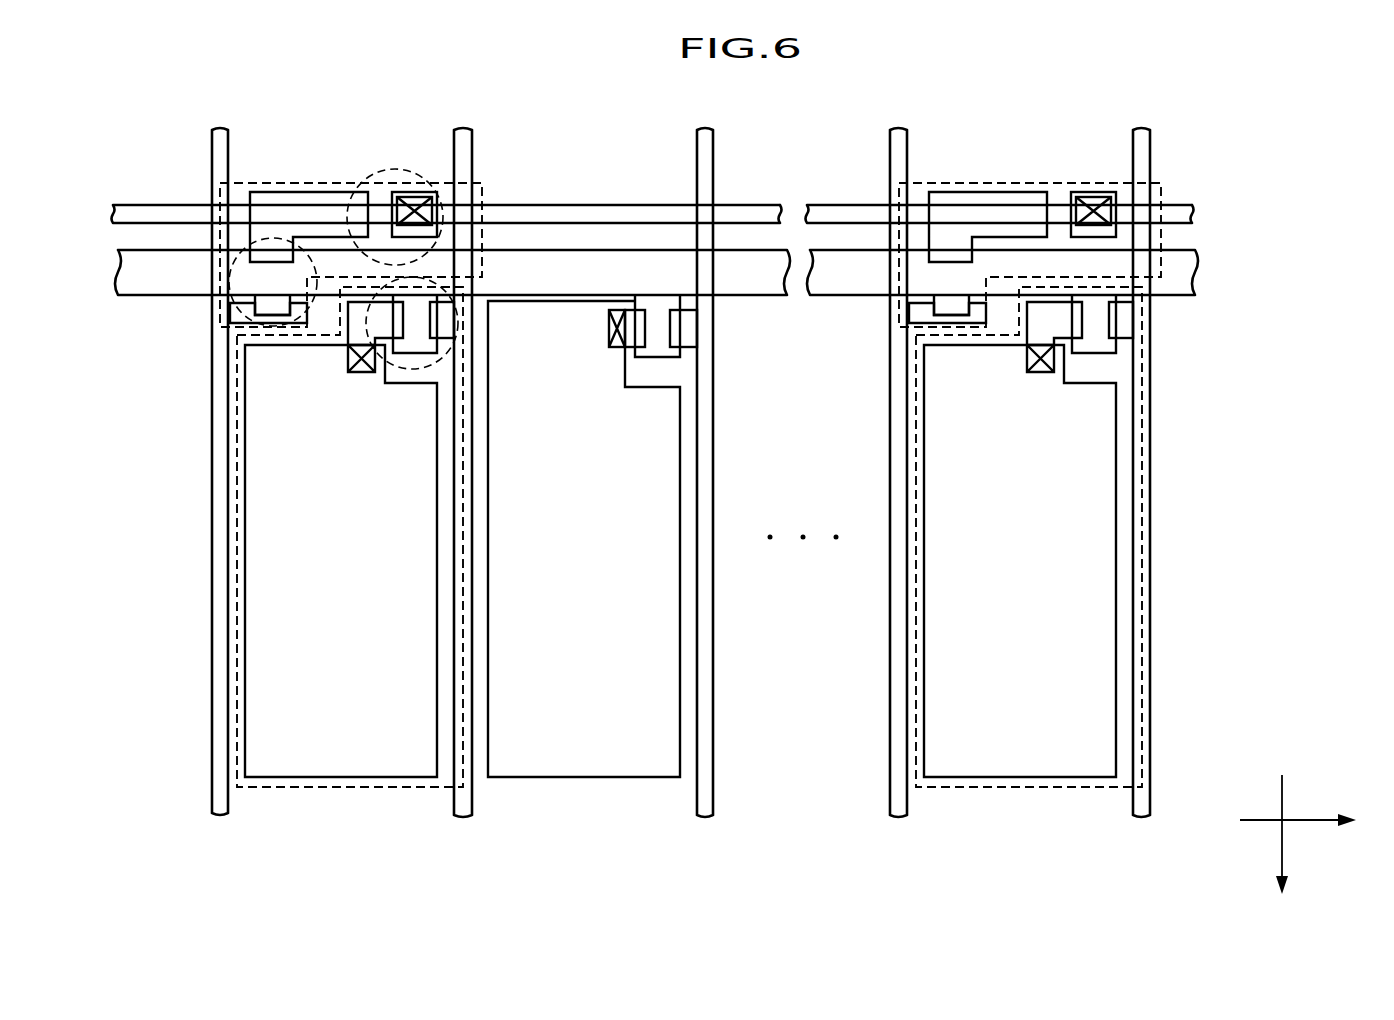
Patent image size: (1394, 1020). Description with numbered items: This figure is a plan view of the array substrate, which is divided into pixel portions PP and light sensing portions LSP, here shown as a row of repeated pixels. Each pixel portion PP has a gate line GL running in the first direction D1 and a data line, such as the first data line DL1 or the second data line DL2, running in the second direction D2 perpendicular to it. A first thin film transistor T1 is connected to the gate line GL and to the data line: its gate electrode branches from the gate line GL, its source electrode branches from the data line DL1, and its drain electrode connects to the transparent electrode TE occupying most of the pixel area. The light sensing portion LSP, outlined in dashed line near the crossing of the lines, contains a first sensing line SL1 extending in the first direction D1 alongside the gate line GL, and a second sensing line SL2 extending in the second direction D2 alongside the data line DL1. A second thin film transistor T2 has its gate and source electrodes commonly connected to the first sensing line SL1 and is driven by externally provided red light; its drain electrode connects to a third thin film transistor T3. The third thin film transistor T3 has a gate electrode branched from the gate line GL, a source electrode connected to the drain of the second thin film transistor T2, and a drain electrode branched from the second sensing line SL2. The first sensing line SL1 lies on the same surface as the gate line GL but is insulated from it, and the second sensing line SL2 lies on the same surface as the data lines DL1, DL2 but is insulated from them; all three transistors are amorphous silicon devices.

The first sensing line SL1 is at (130, 207).
The second sensing line SL2 is at (218, 148).
The gate line GL is at (147, 287).
The first data line DL1 is at (468, 157).
The second data line DL2 is at (710, 157).
The light sensing portion LSP is at (337, 183).
The first thin film transistor T1 is at (445, 358).
The second thin film transistor T2 is at (383, 168).
The third thin film transistor T3 is at (270, 237).
The transparent electrode TE is at (287, 777).
The pixel portion PP is at (347, 787).
The first direction D1 is at (1315, 821).
The second direction D2 is at (1283, 849).